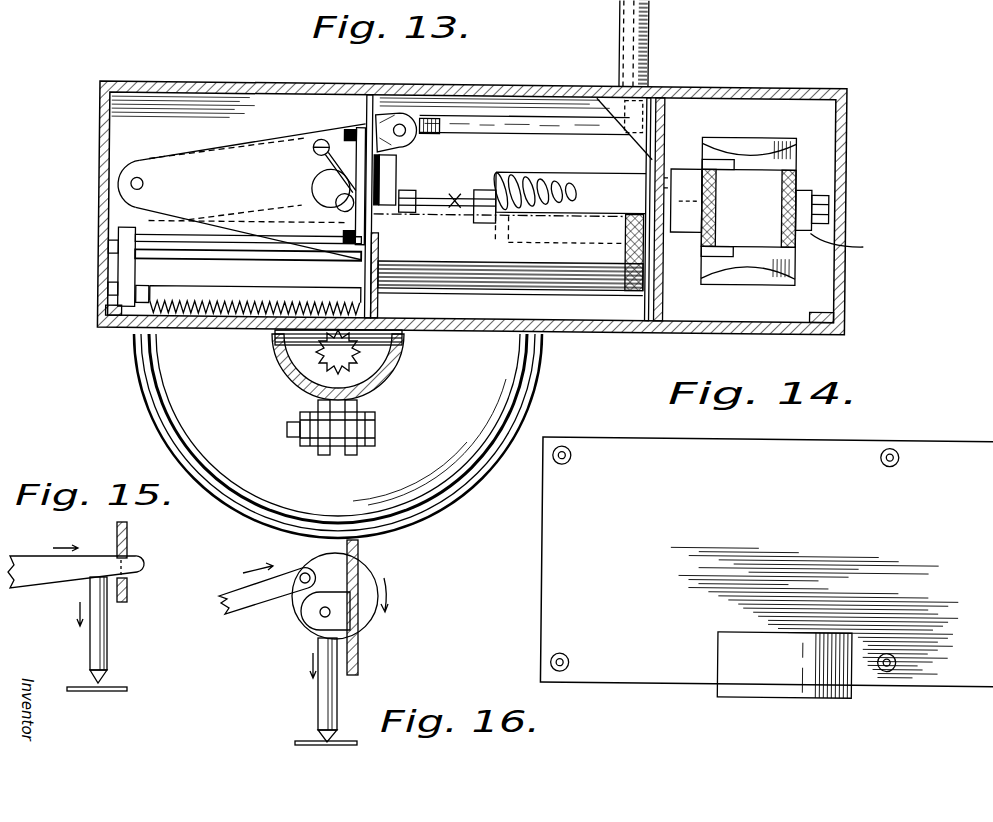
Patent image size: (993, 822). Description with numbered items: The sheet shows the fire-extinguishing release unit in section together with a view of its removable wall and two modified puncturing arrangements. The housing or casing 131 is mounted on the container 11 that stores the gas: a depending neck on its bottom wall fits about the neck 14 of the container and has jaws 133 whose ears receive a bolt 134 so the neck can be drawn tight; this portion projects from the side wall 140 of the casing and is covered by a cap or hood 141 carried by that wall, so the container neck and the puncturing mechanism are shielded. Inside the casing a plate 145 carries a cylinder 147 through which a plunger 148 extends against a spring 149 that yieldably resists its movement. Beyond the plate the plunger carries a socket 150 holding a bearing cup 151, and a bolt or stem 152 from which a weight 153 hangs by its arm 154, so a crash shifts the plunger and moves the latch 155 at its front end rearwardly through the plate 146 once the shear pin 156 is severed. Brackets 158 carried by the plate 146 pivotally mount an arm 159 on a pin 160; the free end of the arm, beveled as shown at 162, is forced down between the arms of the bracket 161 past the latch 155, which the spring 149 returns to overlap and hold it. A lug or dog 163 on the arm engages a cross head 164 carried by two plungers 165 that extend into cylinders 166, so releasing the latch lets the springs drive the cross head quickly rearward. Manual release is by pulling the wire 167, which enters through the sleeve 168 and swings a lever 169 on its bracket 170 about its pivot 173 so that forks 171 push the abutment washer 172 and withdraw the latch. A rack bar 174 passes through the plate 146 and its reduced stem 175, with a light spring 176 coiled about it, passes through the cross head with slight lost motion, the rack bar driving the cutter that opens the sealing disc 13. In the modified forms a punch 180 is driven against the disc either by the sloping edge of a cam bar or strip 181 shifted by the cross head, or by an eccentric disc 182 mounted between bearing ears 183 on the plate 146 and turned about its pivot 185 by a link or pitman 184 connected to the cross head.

In FIG. 13, the container 11 is at (183, 382).
In FIG. 15, the sealing disc 13 is at (115, 692).
In FIG. 16, the sealing disc 13 is at (305, 747).
In FIG. 13, the container neck 14 is at (305, 367).
In FIG. 13, the housing 131 is at (201, 80).
In FIG. 13, the jaws 133 is at (280, 362).
In FIG. 13, the bolt 134 is at (373, 427).
In FIG. 13, the side wall 140 is at (502, 327).
In FIG. 14, the side wall 140 is at (940, 467).
In FIG. 13, the hood 141 is at (398, 334).
In FIG. 14, the hood 141 is at (770, 678).
In FIG. 13, the plate 145 is at (664, 306).
In FIG. 13, the plate 146 is at (366, 97).
In FIG. 15, the plate 146 is at (127, 540).
In FIG. 16, the plate 146 is at (358, 573).
In FIG. 13, the cylinder 147 is at (603, 175).
In FIG. 13, the plunger 148 is at (498, 206).
In FIG. 13, the spring 149 is at (533, 174).
In FIG. 13, the socket 150 is at (687, 181).
In FIG. 13, the bearing cup 151 is at (749, 211).
In FIG. 13, the bolt 152 is at (832, 197).
In FIG. 13, the weight 153 is at (758, 271).
In FIG. 13, the arm 154 is at (854, 247).
In FIG. 13, the latch 155 is at (400, 176).
In FIG. 13, the shear pin 156 is at (320, 158).
In FIG. 13, the brackets 158 is at (223, 152).
In FIG. 13, the arm 159 is at (223, 187).
In FIG. 13, the pin 160 is at (140, 177).
In FIG. 13, the bracket 161 is at (372, 210).
In FIG. 13, the bevel 162 is at (326, 184).
In FIG. 13, the dog 163 is at (160, 227).
In FIG. 13, the cross head 164 is at (124, 266).
In FIG. 13, the plungers 165 is at (233, 245).
In FIG. 13, the cylinders 166 is at (495, 259).
In FIG. 13, the wire 167 is at (617, 1).
In FIG. 13, the sleeve 168 is at (647, 44).
In FIG. 13, the lever 169 is at (488, 121).
In FIG. 13, the bracket 170 is at (385, 112).
In FIG. 13, the forks 171 is at (408, 156).
In FIG. 13, the abutment washer 172 is at (452, 200).
In FIG. 13, the pivot 173 is at (403, 124).
In FIG. 13, the rack bar 174 is at (275, 281).
In FIG. 13, the stem 175 is at (150, 287).
In FIG. 13, the light spring 176 is at (138, 318).
In FIG. 15, the punch 180 is at (100, 635).
In FIG. 16, the punch 180 is at (327, 693).
In FIG. 15, the cam bar 181 is at (33, 565).
In FIG. 16, the cam disc 182 is at (367, 600).
In FIG. 16, the bearing ears 183 is at (337, 617).
In FIG. 16, the link 184 is at (255, 595).
In FIG. 16, the eccentric pivot 185 is at (320, 617).